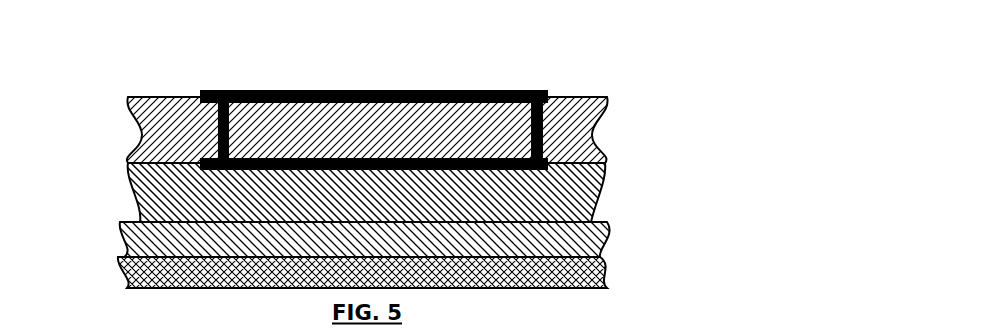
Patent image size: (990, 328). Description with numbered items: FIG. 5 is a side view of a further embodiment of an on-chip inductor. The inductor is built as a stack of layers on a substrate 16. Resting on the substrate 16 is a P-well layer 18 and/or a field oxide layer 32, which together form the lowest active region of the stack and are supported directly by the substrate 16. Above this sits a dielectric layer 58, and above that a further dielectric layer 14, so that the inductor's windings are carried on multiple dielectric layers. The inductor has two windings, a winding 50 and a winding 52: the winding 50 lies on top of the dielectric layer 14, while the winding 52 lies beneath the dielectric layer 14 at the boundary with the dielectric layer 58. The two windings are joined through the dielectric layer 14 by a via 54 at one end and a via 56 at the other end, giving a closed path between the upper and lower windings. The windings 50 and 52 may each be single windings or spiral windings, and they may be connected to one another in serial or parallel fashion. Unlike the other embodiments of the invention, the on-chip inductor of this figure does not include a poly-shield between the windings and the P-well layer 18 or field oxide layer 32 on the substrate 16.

The dielectric layer 14 is at (367, 130).
The dielectric layer 58 is at (367, 192).
The P-well layer 18 is at (520, 239).
The field oxide layer 32 is at (626, 239).
The substrate 16 is at (620, 266).
The winding 50 is at (392, 88).
The winding 52 is at (501, 174).
The via 54 is at (546, 137).
The via 56 is at (216, 137).